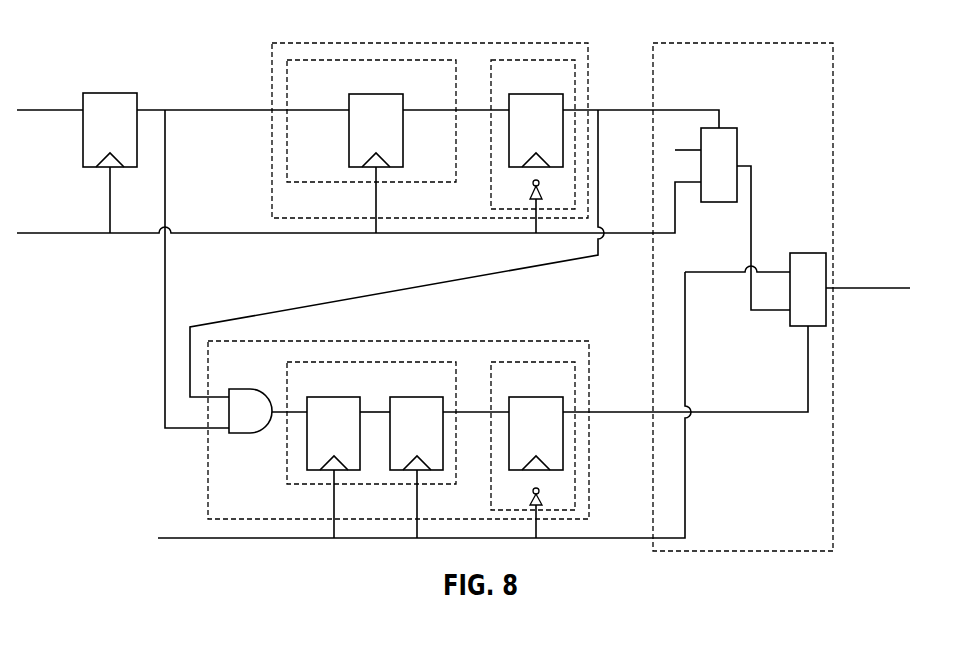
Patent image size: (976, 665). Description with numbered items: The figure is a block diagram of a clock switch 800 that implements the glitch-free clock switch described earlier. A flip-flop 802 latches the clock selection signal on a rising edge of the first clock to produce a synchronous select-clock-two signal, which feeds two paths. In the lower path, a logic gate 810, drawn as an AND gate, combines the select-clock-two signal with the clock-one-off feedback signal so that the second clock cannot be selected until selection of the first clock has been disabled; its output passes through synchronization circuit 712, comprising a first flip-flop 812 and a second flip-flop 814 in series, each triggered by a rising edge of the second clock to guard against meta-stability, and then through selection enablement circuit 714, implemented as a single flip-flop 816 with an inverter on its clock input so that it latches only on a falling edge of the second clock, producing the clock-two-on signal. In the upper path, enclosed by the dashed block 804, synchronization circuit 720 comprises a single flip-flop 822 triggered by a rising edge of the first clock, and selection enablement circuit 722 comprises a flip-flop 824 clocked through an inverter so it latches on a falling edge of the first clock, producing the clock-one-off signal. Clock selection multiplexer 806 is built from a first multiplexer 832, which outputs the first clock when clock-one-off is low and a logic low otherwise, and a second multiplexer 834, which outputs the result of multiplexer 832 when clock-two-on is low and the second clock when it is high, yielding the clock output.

The clock switch 800 is at (858, 60).
The flip-flop 802 is at (433, 341).
The clock 1 disable path circuit 804 is at (437, 42).
The clock selection multiplexer 806 is at (741, 43).
The AND gate 810 is at (246, 389).
The first flip-flop 812 is at (333, 433).
The second flip-flop 814 is at (416, 433).
The flip-flop 816 is at (536, 451).
The flip-flop 822 is at (376, 130).
The flip-flop 824 is at (536, 146).
The first multiplexer 832 is at (740, 136).
The second multiplexer 834 is at (804, 253).
The synchronization circuit 712 is at (447, 484).
The selection enablement circuit 714 is at (491, 390).
The synchronization circuit 720 is at (447, 182).
The selection enablement circuit 722 is at (491, 87).